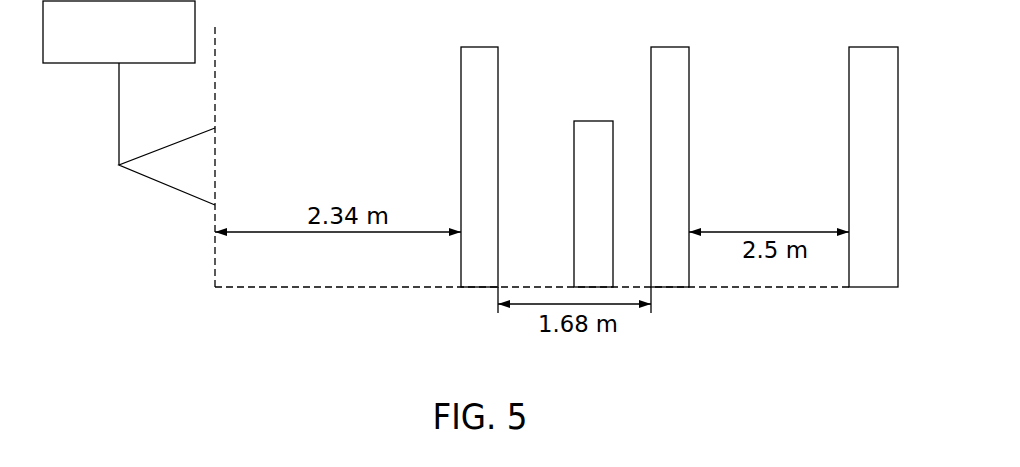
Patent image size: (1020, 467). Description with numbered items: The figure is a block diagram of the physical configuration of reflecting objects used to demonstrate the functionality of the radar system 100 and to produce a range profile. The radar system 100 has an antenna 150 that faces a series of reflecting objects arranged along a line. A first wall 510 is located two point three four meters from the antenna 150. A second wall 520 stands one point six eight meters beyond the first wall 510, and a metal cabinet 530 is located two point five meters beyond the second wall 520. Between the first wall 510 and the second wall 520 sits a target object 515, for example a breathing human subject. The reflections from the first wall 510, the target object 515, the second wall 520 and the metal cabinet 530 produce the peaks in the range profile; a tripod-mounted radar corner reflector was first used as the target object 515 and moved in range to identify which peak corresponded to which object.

The radar system 100 is at (38, 126).
The antenna 150 is at (175, 189).
The first wall 510 is at (478, 47).
The target object 515 is at (598, 121).
The second wall 520 is at (668, 47).
The metal cabinet 530 is at (873, 47).